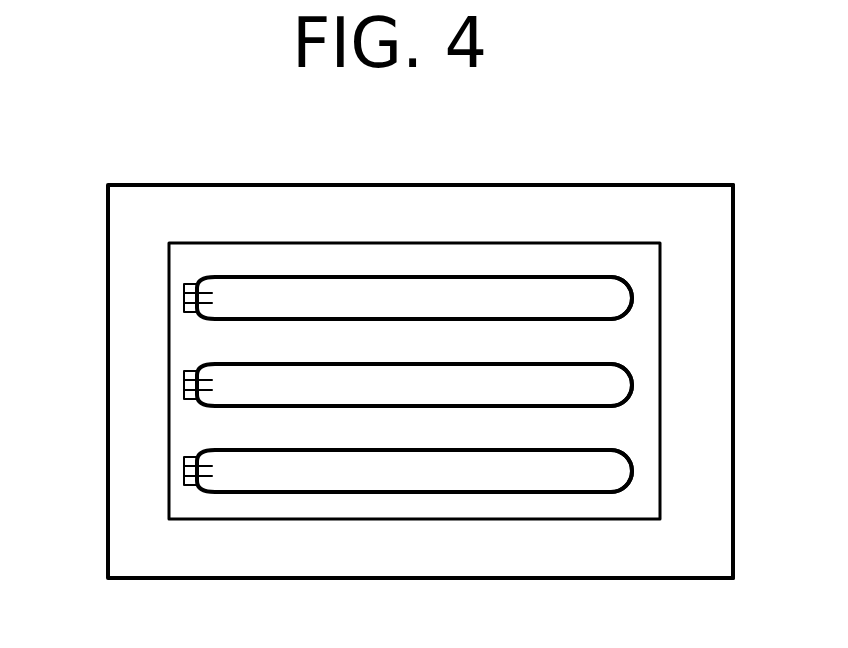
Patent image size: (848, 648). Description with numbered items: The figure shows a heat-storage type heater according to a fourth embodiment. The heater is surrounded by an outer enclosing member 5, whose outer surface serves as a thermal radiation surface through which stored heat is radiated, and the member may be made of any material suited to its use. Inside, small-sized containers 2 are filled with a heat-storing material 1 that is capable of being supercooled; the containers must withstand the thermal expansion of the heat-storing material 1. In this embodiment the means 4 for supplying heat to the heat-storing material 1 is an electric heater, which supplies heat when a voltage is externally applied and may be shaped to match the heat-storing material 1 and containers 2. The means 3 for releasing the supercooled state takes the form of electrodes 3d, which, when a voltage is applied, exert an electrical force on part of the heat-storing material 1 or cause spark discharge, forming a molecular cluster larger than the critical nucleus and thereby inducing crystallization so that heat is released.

The heat-storing material 1 is at (518, 455).
The small-sized containers 2 is at (632, 308).
The means for releasing the supercooled state 3 is at (183, 532).
The electrodes 3d is at (184, 468).
The means for supplying heat 4 is at (578, 230).
The outer enclosing member 5 is at (733, 495).